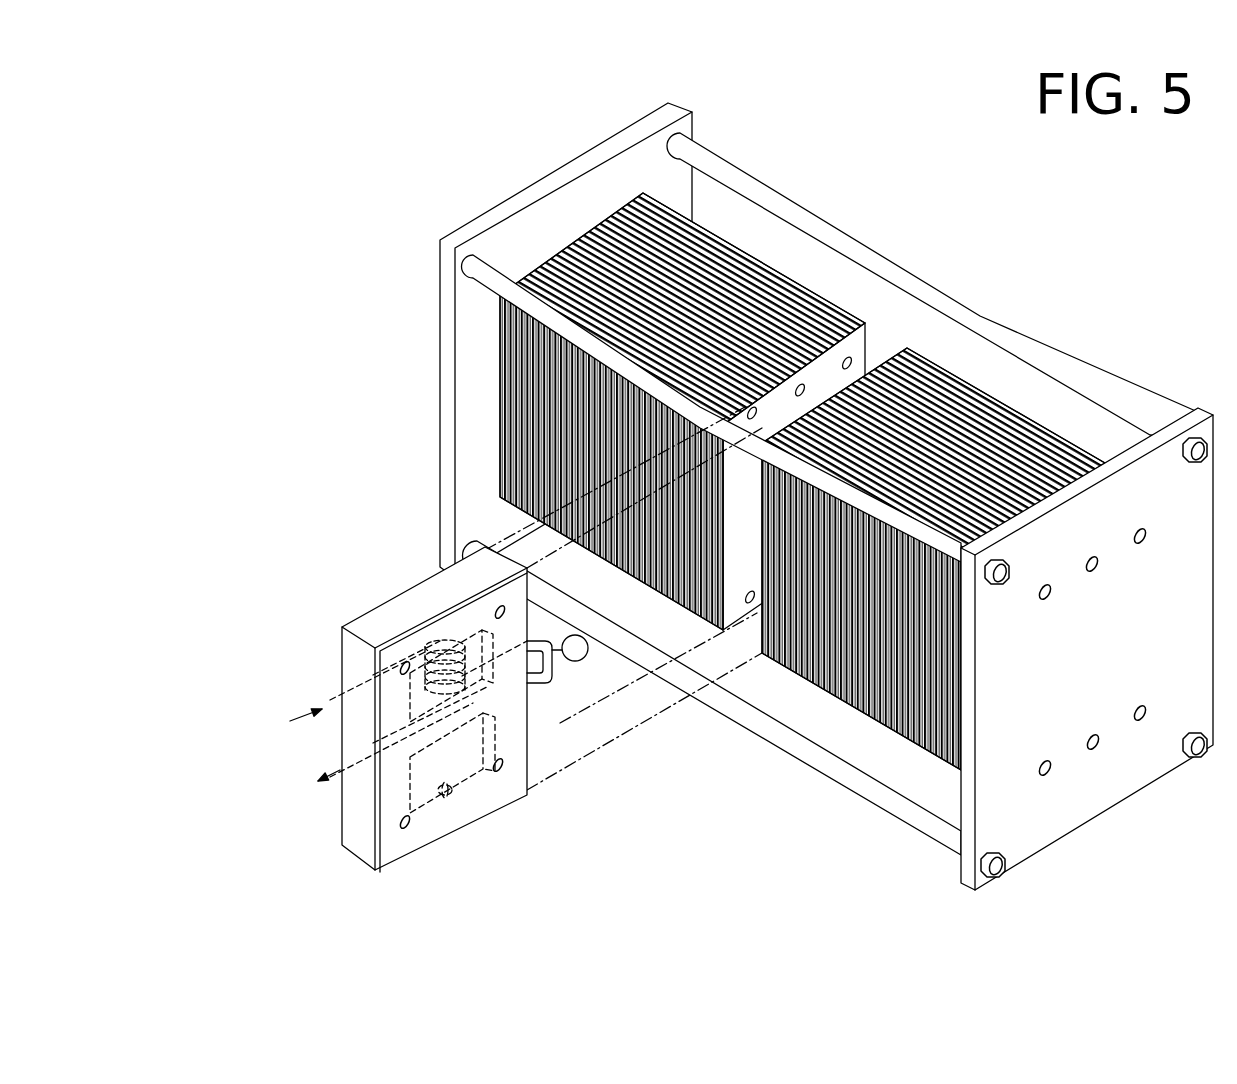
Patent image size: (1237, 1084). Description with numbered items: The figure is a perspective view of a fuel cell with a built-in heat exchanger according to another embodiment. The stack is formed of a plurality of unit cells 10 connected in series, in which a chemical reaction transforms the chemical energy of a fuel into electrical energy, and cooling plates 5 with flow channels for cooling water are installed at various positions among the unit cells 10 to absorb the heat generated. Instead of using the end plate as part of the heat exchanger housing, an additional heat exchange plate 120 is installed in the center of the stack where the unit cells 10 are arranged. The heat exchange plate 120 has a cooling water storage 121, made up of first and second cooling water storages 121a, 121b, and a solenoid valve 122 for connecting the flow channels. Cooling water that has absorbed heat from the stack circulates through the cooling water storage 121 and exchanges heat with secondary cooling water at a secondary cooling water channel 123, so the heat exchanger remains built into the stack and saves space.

The cooling plate 5 is at (713, 233).
The unit cell 10 is at (802, 450).
The heat exchange plate 120 is at (397, 734).
The cooling water storage 121 is at (484, 748).
The first cooling water storage 121a is at (478, 682).
The second cooling water storage 121b is at (462, 763).
The solenoid valve 122 is at (578, 661).
The secondary cooling water channel 123 is at (430, 643).